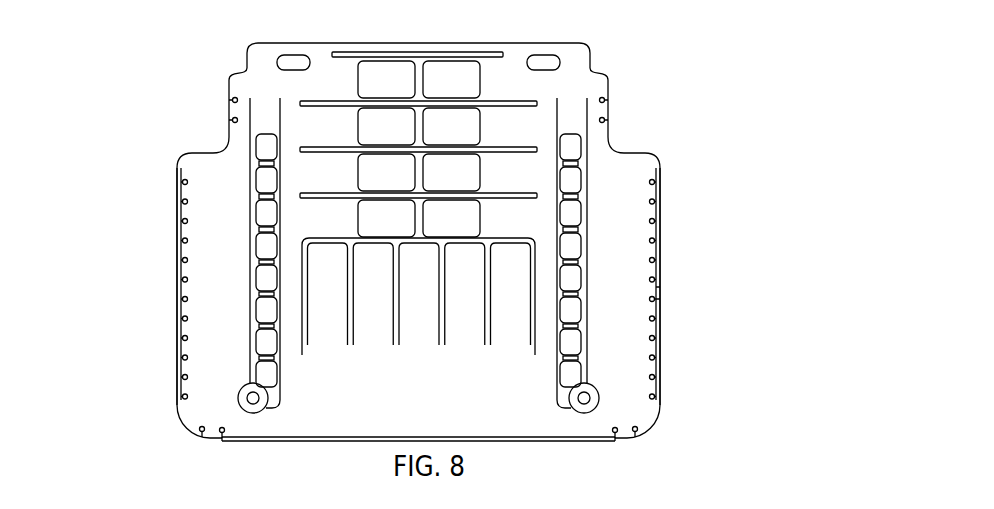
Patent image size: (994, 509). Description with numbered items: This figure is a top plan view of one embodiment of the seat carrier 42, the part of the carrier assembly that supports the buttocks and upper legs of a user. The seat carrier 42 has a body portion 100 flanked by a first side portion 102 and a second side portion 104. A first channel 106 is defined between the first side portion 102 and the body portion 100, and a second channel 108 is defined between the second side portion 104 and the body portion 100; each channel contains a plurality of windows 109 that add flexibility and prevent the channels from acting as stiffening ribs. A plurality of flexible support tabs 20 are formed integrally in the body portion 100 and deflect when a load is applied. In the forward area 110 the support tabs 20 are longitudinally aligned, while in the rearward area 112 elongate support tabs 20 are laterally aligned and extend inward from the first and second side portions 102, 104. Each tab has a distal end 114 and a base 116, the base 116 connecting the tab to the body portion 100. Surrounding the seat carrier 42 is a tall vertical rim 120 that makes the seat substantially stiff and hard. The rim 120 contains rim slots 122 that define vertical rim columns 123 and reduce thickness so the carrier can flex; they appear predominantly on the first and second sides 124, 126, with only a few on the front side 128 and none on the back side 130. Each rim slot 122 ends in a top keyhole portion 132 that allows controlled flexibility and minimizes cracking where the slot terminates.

The seat carrier 42 is at (130, 109).
The body portion 100 is at (409, 410).
The first side portion 102 is at (209, 284).
The second side portion 104 is at (606, 284).
The first channel 106 is at (310, 213).
The second channel 108 is at (573, 195).
The windows 109 is at (270, 310).
The forward area 110 is at (353, 412).
The rearward area 112 is at (507, 80).
The distal end 114 is at (427, 227).
The base 116 is at (252, 218).
The rim 120 is at (662, 403).
The rim slots 122 is at (177, 375).
The vertical rim columns 123 is at (176, 330).
The first side 124 is at (177, 231).
The second side 126 is at (659, 287).
The front side 128 is at (270, 440).
The back side 130 is at (357, 43).
The top keyhole portion 132 is at (182, 338).
The support tabs 20 is at (369, 89).